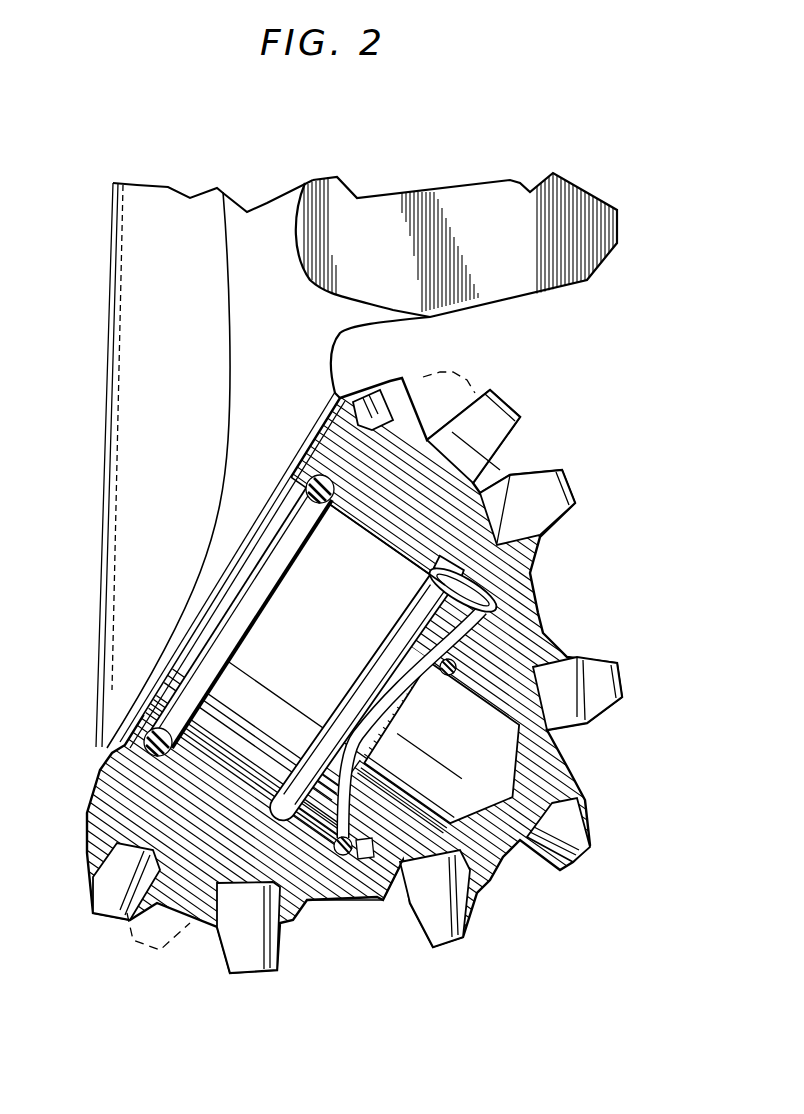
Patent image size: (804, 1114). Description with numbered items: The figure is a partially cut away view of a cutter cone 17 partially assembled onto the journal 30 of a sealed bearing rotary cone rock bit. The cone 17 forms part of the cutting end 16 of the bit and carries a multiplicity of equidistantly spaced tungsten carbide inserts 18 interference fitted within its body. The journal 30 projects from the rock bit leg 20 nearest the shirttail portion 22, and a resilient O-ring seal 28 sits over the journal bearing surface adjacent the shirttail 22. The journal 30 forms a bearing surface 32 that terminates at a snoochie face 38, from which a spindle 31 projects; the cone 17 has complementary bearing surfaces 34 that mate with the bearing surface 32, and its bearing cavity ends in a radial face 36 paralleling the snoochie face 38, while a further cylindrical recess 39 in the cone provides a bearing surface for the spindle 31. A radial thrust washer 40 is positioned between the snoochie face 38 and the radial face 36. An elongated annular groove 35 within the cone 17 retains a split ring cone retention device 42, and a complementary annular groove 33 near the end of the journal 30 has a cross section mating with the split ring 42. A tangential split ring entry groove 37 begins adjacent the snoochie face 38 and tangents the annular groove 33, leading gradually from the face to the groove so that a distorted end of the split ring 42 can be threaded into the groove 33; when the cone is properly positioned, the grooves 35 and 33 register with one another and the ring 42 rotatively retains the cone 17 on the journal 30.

The cutting end 16 is at (567, 537).
The cutter cone 17 is at (587, 728).
The tungsten carbide inserts 18 is at (537, 477).
The leg 20 is at (148, 290).
The shirttail 22 is at (130, 670).
The O-ring seal 28 is at (138, 752).
The journal 30 is at (393, 570).
The spindle 31 is at (485, 860).
The bearing surface 32 is at (300, 616).
The annular groove 33 is at (415, 618).
The complementary bearing surfaces 34 is at (380, 540).
The elongated annular groove 35 is at (482, 592).
The radial face 36 is at (365, 862).
The tangential split ring entry groove 37 is at (505, 606).
The snoochie face 38 is at (358, 872).
The cylindrical recess 39 is at (527, 730).
The radial thrust washer 40 is at (480, 660).
The split ring cone retention device 42 is at (316, 748).